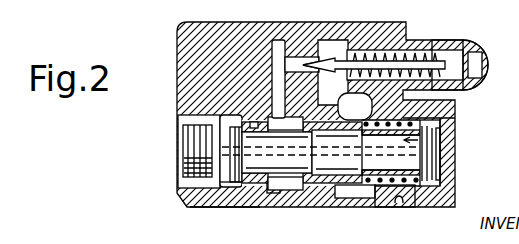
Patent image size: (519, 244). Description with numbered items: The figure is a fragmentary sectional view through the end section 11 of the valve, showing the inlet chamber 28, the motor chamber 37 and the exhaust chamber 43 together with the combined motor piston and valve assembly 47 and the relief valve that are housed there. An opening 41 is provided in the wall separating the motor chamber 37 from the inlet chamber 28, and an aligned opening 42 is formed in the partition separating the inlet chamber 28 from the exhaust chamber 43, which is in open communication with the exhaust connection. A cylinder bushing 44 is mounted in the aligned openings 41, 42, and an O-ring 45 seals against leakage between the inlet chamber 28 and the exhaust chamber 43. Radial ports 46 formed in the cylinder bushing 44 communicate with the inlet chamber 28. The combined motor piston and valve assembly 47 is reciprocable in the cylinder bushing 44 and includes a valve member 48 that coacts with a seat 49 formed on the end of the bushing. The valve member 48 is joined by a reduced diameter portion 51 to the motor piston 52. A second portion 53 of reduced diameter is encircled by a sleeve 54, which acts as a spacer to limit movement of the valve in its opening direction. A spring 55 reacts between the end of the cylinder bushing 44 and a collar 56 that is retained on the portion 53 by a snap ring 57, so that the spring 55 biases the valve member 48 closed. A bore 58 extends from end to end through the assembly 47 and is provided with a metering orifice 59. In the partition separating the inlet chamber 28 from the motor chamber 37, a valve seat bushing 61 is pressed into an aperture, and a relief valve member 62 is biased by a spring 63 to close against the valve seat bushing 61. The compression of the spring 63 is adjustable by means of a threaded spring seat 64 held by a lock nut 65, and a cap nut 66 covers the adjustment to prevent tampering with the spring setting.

The end section 11 is at (170, 55).
The inlet chamber 28 is at (176, 185).
The motor chamber 37 is at (378, 196).
The opening 41 is at (355, 198).
The opening 42 is at (238, 183).
The exhaust chamber 43 is at (228, 183).
The cylinder bushing 44 is at (328, 183).
The O-ring 45 is at (255, 183).
The radial ports 46 is at (277, 193).
The combined motor piston and valve assembly 47 is at (448, 121).
The valve member 48 is at (228, 130).
The seat 49 is at (226, 208).
The reduced diameter portion 51 is at (297, 150).
The motor piston 52 is at (355, 106).
The second portion of reduced diameter 53 is at (424, 158).
The sleeve 54 is at (400, 199).
The spring 55 is at (420, 114).
The collar 56 is at (441, 186).
The snap ring 57 is at (438, 180).
The bore 58 is at (341, 147).
The metering orifice 59 is at (183, 137).
The valve seat bushing 61 is at (335, 72).
The relief valve member 62 is at (331, 56).
The spring 63 is at (432, 40).
The threaded spring seat 64 is at (366, 50).
The lock nut 65 is at (418, 40).
The cap nut 66 is at (474, 41).